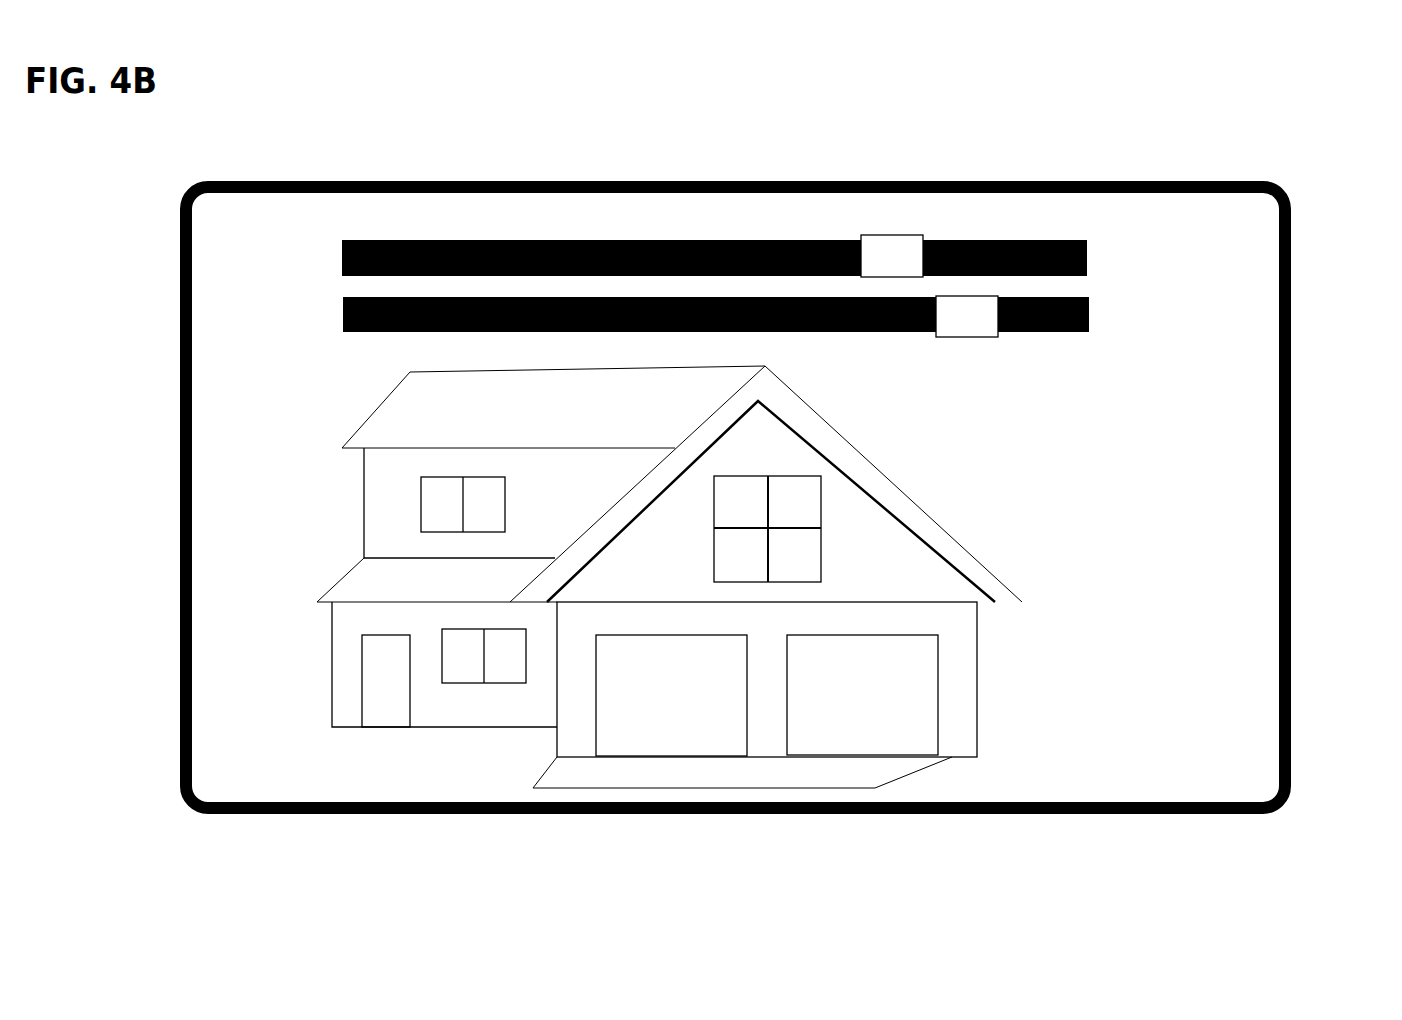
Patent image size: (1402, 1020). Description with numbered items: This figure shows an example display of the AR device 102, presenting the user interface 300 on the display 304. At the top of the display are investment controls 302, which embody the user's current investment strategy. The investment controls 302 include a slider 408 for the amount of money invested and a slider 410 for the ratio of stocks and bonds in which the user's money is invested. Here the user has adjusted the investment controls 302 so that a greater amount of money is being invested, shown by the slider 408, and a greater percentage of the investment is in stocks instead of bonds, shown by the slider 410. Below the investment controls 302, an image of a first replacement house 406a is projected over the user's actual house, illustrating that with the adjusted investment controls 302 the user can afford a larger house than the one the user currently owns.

The user interface 300 is at (1212, 147).
The AR device 102 is at (1291, 383).
The investment controls 302 is at (157, 223).
The slider 408 is at (1250, 257).
The slider 410 is at (1257, 316).
The display 304 is at (1196, 693).
The first replacement house 406a is at (920, 521).